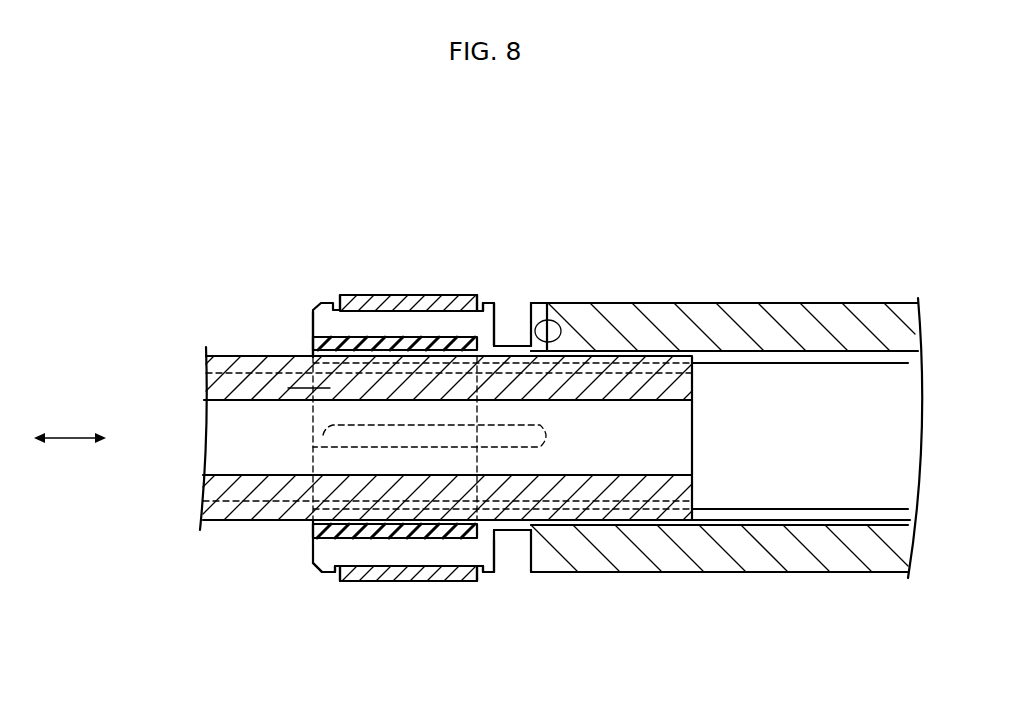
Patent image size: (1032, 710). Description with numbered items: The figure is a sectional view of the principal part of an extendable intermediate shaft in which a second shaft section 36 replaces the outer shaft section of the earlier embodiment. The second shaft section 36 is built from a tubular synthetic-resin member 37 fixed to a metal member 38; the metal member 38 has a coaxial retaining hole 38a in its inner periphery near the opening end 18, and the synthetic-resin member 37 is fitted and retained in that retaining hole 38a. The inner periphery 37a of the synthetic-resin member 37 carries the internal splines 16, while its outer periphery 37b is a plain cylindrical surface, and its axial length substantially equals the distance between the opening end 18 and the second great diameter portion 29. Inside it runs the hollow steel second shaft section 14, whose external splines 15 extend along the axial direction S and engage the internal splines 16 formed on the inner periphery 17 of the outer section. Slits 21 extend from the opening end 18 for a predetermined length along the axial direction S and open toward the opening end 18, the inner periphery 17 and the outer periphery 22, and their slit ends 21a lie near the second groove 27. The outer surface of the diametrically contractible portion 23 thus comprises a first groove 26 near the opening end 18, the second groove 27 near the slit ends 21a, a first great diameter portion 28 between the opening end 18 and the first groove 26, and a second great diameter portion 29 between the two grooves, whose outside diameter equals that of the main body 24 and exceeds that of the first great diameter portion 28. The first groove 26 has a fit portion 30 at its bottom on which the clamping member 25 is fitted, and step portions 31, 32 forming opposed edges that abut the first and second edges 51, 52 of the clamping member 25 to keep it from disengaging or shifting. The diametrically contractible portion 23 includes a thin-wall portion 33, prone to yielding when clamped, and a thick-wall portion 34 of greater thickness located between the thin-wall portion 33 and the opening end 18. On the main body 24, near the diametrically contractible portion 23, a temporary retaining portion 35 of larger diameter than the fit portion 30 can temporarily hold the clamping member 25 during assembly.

The second shaft section 14 is at (216, 532).
The external splines 15 is at (240, 525).
The internal splines 16 is at (800, 508).
The inner periphery 17 is at (847, 523).
The opening end 18 is at (313, 346).
The slits 21 is at (327, 323).
The slit ends 21a is at (548, 424).
The outer periphery 22 is at (757, 302).
The diametrically contractible portion 23 is at (412, 606).
The main body 24 is at (724, 560).
The clamping member 25 is at (398, 583).
The first groove 26 is at (405, 252).
The second groove 27 is at (500, 323).
The first great diameter portion 28 is at (332, 304).
The second great diameter portion 29 is at (485, 303).
The fit portion 30 is at (400, 308).
The step portion 31 is at (345, 297).
The step portion 32 is at (456, 273).
The thin-wall portion 33 is at (507, 530).
The thick-wall portion 34 is at (452, 552).
The temporary retaining portion 35 is at (617, 573).
The second shaft section 36 is at (561, 264).
The synthetic-resin member 37 is at (503, 338).
The inner periphery 37a is at (378, 362).
The outer periphery 37b is at (313, 340).
The metal member 38 is at (540, 222).
The retaining hole 38a is at (313, 342).
The first edge 51 is at (338, 575).
The second edge 52 is at (497, 530).
The axial direction S is at (63, 450).